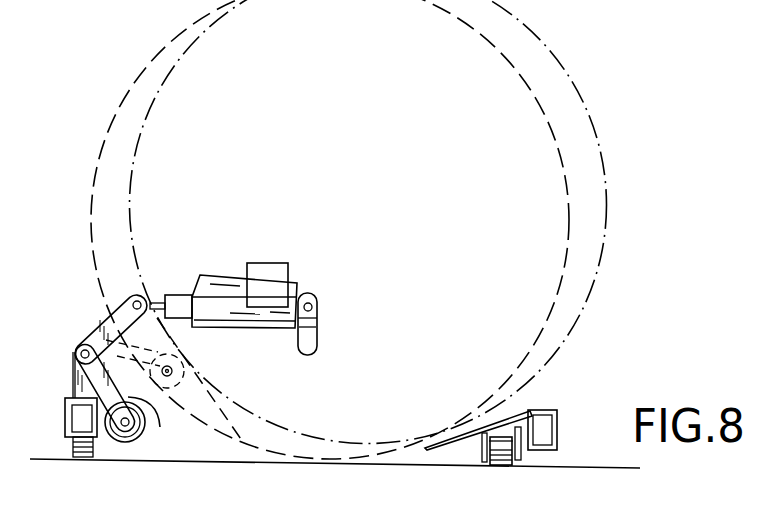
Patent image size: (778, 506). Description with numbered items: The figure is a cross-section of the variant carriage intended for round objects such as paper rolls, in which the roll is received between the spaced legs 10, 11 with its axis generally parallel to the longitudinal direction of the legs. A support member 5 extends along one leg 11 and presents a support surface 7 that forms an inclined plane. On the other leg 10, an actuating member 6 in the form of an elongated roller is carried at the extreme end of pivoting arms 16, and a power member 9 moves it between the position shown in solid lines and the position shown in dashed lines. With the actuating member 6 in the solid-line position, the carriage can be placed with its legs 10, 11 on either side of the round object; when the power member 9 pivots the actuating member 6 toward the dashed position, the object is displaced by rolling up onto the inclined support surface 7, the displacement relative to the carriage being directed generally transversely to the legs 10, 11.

The support member 5 is at (444, 453).
The actuating member 6 is at (126, 442).
The support surface 7 is at (522, 401).
The power member 9 is at (230, 303).
The leg 10 is at (66, 412).
The leg 11 is at (558, 428).
The pivoting arms 16 is at (158, 402).